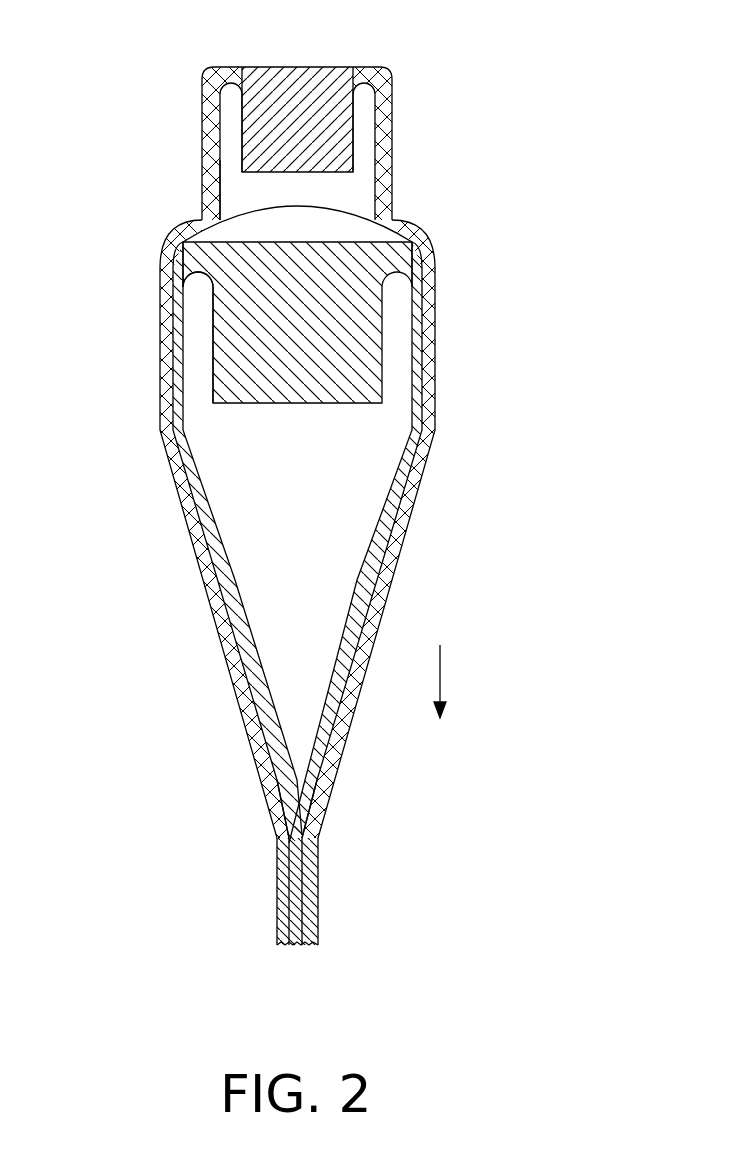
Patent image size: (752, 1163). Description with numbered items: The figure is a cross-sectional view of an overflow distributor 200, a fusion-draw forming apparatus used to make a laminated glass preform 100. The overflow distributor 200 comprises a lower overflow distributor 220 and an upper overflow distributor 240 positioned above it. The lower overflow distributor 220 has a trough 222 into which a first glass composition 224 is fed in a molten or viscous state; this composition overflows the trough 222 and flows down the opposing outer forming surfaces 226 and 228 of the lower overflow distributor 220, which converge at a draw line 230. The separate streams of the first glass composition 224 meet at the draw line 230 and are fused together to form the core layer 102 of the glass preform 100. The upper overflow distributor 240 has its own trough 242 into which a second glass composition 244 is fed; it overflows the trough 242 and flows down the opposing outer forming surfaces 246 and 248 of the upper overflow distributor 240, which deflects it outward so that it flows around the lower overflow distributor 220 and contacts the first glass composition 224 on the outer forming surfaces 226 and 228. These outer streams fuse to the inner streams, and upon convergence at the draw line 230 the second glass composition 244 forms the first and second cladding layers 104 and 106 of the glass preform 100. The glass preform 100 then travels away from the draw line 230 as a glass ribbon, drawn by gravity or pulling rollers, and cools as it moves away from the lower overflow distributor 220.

The glass preform 100 is at (224, 957).
The core layer 102 is at (280, 847).
The first cladding layer 104 is at (280, 893).
The second cladding layer 106 is at (319, 893).
The overflow distributor 200 is at (503, 104).
The lower overflow distributor 220 is at (400, 318).
The trough 222 is at (212, 340).
The first glass composition 224 is at (292, 252).
The outer forming surface 226 is at (196, 473).
The outer forming surface 228 is at (384, 514).
The draw line 230 is at (322, 807).
The upper overflow distributor 240 is at (388, 99).
The trough 242 is at (240, 133).
The second glass composition 244 is at (305, 67).
The outer forming surface 246 is at (222, 174).
The outer forming surface 248 is at (363, 170).